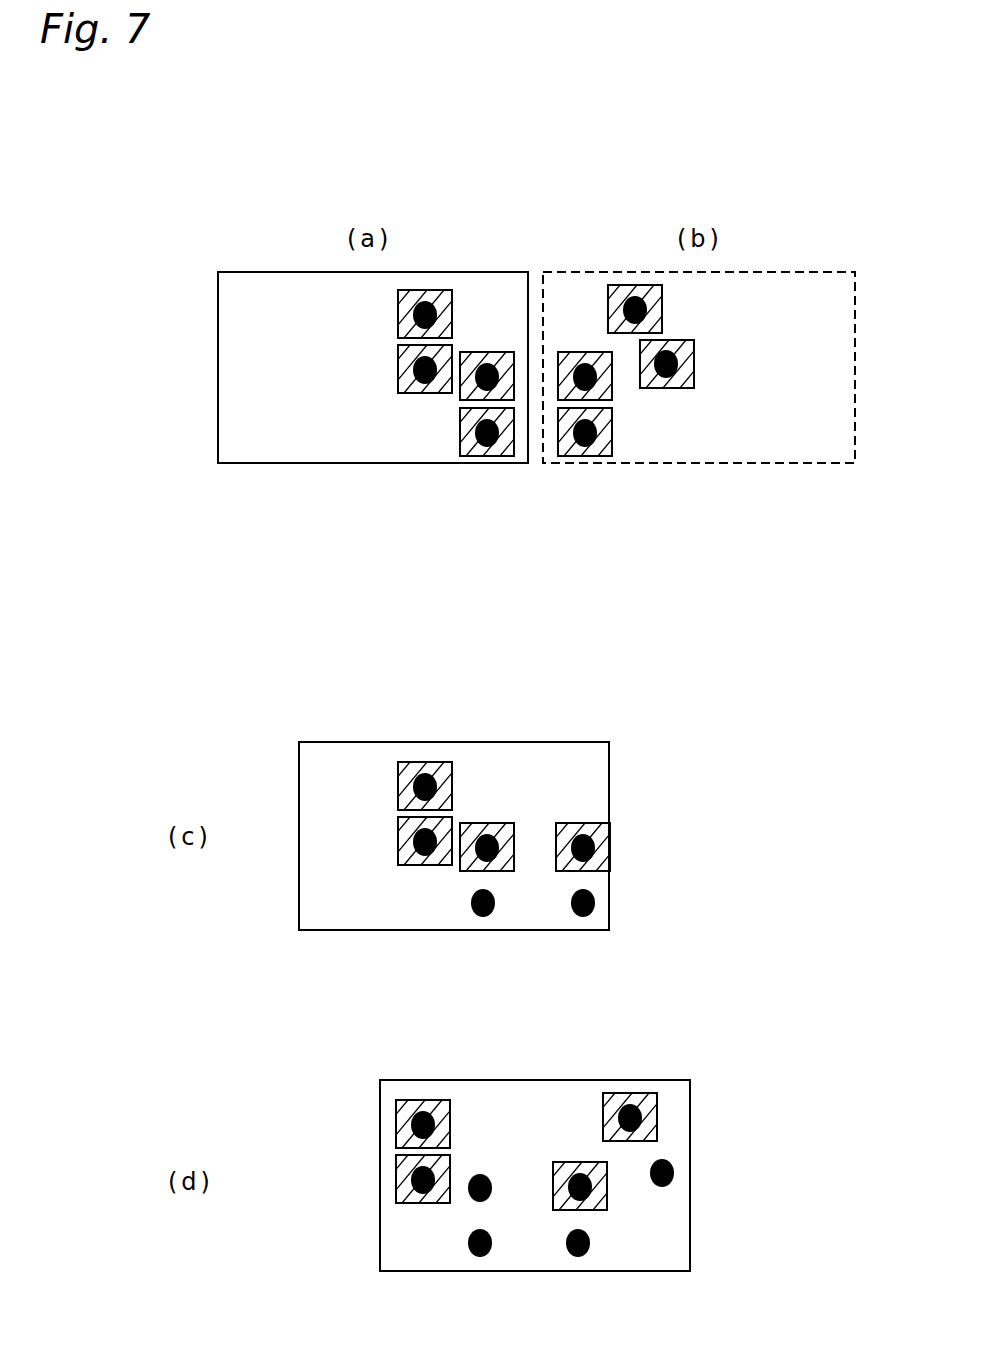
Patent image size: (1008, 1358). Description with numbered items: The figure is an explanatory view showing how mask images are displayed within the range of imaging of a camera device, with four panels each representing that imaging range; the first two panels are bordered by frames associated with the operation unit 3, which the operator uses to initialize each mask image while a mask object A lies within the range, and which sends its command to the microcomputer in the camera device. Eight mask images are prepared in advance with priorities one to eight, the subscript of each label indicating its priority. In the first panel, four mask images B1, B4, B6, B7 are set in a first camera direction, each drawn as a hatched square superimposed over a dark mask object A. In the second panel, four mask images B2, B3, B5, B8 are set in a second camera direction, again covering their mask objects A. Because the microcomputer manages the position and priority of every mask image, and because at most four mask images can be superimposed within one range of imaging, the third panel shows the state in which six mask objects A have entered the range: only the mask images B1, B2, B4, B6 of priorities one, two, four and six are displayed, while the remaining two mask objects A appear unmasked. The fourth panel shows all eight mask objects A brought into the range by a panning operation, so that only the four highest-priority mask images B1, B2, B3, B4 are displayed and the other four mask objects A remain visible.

The operation unit 3 is at (230, 391).
The mask object A is at (398, 320).
The mask image assigned priority 1 B1 is at (398, 333).
The mask image assigned priority 2 B2 is at (580, 353).
The mask image assigned priority 3 B3 is at (662, 305).
The mask image assigned priority 4 B4 is at (398, 375).
The mask image assigned priority 5 B5 is at (694, 378).
The mask image assigned priority 6 B6 is at (485, 352).
The mask image assigned priority 7 B7 is at (460, 434).
The mask image assigned priority 8 B8 is at (612, 432).